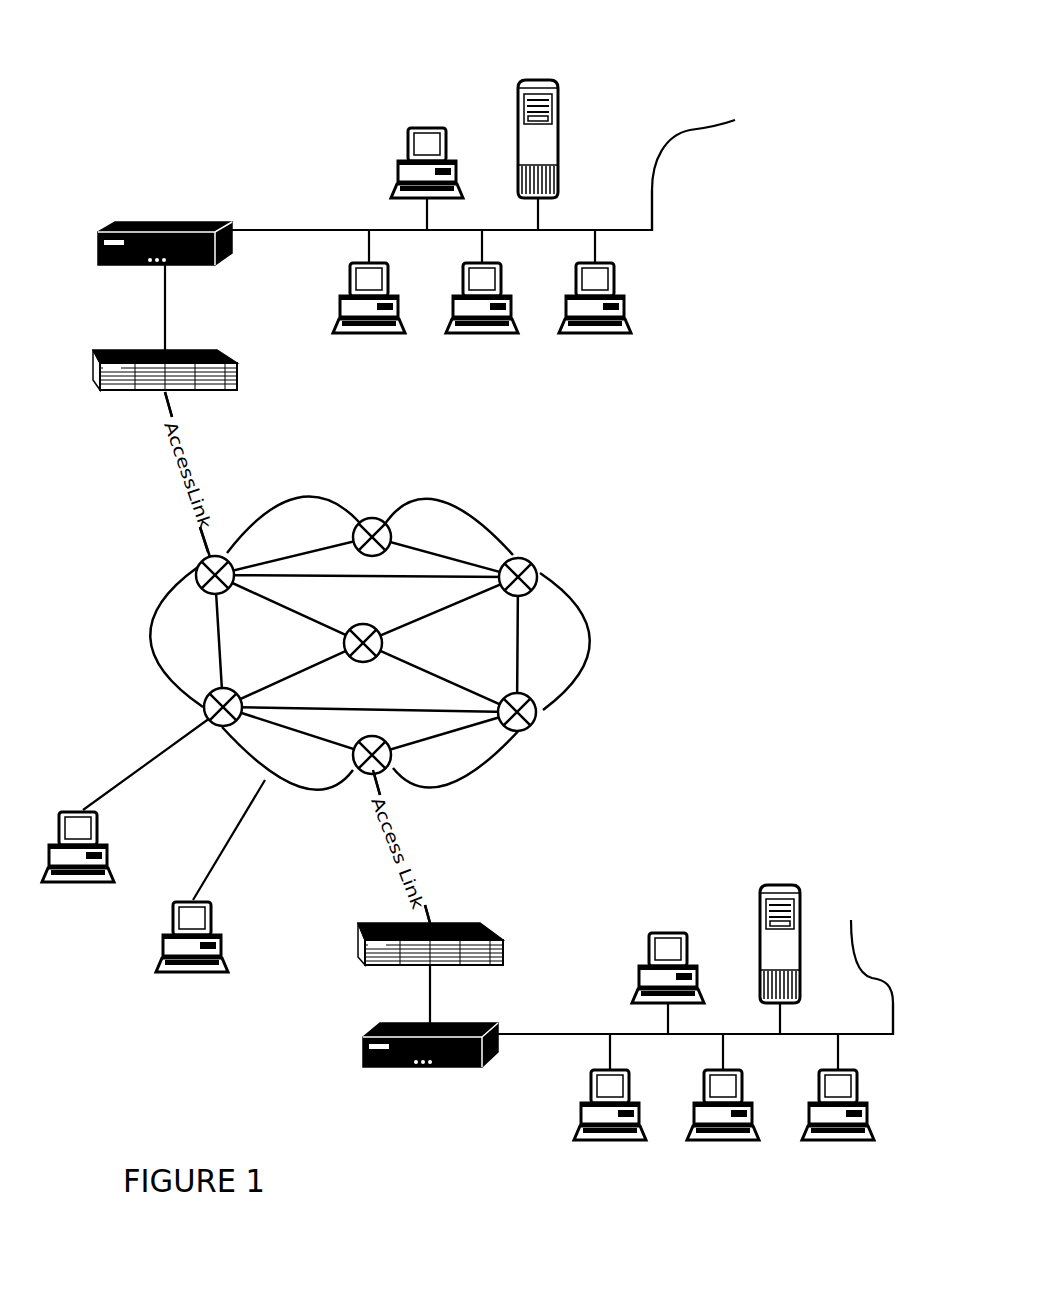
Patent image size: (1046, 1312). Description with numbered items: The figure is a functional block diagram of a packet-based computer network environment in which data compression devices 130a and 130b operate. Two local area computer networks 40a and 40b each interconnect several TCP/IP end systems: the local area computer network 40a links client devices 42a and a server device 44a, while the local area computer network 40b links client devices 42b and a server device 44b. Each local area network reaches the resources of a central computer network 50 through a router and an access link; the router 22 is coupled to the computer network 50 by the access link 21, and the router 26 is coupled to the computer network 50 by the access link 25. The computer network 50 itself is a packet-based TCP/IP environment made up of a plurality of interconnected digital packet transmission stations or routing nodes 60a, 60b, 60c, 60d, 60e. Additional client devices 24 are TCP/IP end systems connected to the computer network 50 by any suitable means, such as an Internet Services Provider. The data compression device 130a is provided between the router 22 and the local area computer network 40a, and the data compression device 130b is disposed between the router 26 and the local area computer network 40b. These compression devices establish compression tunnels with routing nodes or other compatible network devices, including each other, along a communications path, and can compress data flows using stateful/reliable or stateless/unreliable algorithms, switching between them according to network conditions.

The data compression device 130b is at (132, 222).
The router 26 is at (240, 378).
The access link 25 is at (168, 392).
The client device 42b is at (413, 132).
The server device 44b is at (545, 80).
The local area computer network 40b is at (498, 162).
The computer network 50 is at (273, 505).
The routing node 60a is at (360, 771).
The routing node 60b is at (203, 712).
The routing node 60c is at (197, 563).
The routing node 60d is at (342, 642).
The routing node 60e is at (371, 517).
The client device 24 is at (95, 882).
The access link 21 is at (430, 913).
The router 22 is at (465, 924).
The data compression device 130a is at (463, 1068).
The server device 44a is at (792, 885).
The client device 42a is at (660, 933).
The local area computer network 40a is at (695, 962).